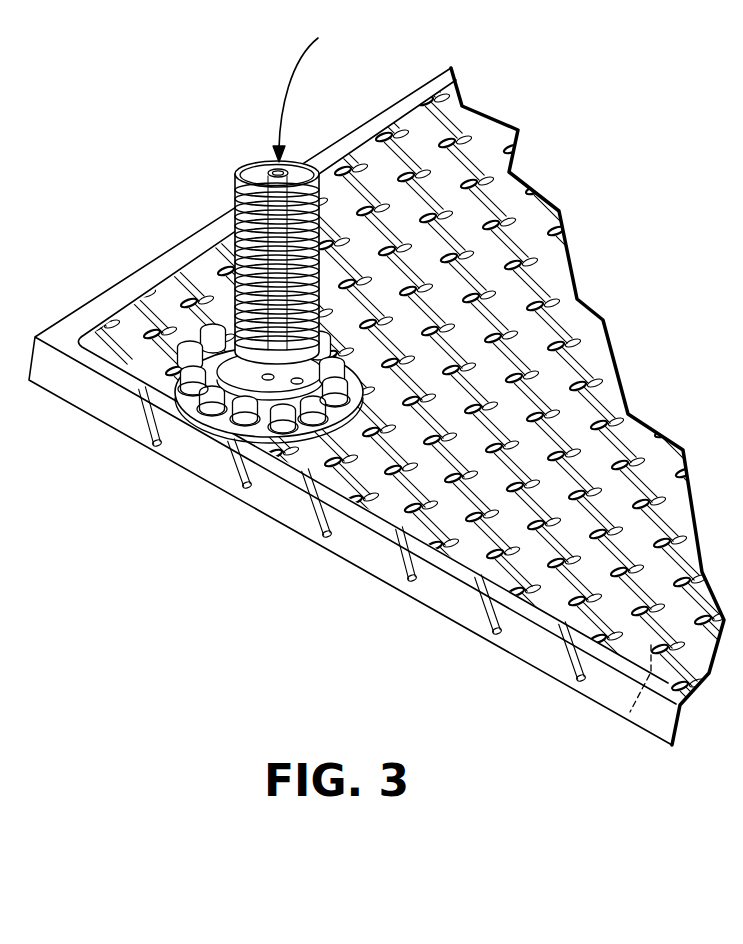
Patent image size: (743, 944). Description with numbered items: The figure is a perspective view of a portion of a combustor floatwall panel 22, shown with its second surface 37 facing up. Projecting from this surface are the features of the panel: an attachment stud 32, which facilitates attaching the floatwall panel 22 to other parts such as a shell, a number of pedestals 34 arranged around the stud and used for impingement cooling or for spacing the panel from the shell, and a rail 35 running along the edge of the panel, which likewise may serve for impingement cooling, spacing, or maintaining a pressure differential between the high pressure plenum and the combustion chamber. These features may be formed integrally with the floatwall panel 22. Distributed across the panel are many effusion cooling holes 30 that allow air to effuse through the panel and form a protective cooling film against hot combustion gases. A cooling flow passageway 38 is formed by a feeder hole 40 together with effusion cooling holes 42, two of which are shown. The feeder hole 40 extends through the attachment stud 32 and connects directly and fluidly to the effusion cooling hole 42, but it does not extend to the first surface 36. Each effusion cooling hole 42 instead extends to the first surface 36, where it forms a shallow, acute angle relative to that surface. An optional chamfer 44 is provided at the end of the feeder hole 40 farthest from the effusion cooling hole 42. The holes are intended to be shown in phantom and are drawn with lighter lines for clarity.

The floatwall panel 22 is at (383, 406).
The effusion cooling holes 30 is at (443, 148).
The attachment stud 32 is at (285, 264).
The pedestals 34 is at (243, 407).
The rail 35 is at (103, 398).
The first surface 36 is at (630, 712).
The second surface 37 is at (462, 139).
The cooling flow passageway 38 is at (311, 90).
The feeder hole 40 is at (277, 208).
The effusion cooling hole 42 is at (297, 384).
The chamfer 44 is at (267, 172).